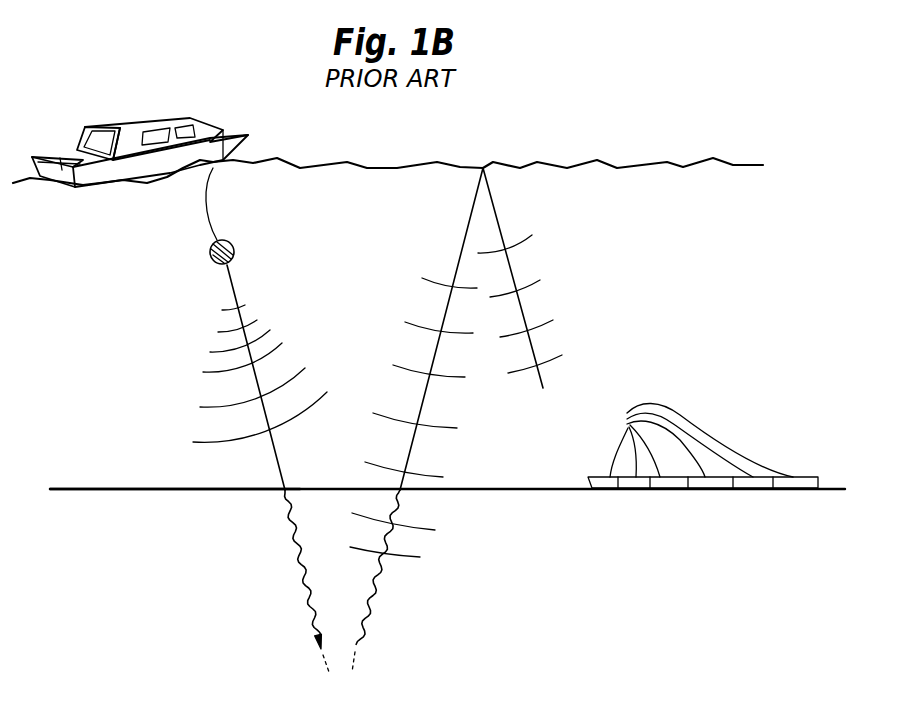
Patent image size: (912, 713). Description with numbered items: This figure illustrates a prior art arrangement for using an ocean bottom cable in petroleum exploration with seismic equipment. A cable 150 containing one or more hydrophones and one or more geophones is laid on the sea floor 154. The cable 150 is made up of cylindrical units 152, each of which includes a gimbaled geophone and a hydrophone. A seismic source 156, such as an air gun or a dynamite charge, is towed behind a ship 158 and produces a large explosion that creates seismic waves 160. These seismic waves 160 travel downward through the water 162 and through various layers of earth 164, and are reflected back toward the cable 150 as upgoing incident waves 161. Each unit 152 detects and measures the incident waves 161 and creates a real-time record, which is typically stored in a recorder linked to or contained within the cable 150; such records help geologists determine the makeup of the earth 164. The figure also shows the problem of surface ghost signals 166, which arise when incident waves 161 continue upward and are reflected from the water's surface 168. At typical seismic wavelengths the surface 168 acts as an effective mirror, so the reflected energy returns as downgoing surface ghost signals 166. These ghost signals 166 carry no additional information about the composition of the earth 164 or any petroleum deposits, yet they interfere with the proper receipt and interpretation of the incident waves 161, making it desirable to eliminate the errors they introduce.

The cable 150 is at (767, 428).
The cylindrical units 152 is at (703, 451).
The sea floor 154 is at (492, 492).
The seismic source 156 is at (210, 255).
The boat 158 is at (168, 172).
The seismic waves 160 is at (184, 305).
The upgoing incident waves 161 is at (394, 594).
The water 162 is at (86, 362).
The layers of earth 164 is at (202, 567).
The surface ghost signals 166 is at (562, 213).
The water's surface 168 is at (483, 168).